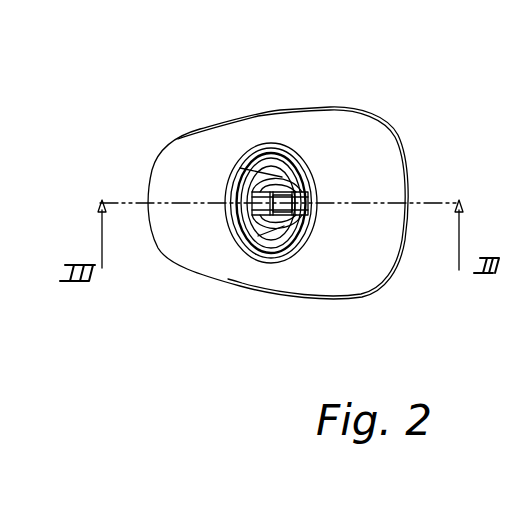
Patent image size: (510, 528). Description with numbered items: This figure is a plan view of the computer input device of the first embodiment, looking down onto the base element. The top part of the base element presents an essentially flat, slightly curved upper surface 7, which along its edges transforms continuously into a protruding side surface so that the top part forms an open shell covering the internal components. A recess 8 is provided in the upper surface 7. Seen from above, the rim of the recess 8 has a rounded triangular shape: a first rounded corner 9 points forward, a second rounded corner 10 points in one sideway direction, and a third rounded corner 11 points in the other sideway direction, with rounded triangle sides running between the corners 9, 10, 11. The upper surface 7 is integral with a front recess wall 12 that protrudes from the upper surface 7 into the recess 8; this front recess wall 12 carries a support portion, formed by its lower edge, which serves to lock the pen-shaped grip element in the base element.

The upper surface 7 is at (350, 181).
The recess 8 is at (266, 166).
The first rounded corner 9 is at (234, 182).
The second rounded corner 10 is at (290, 148).
The third rounded corner 11 is at (293, 257).
The front recess wall 12 is at (252, 215).